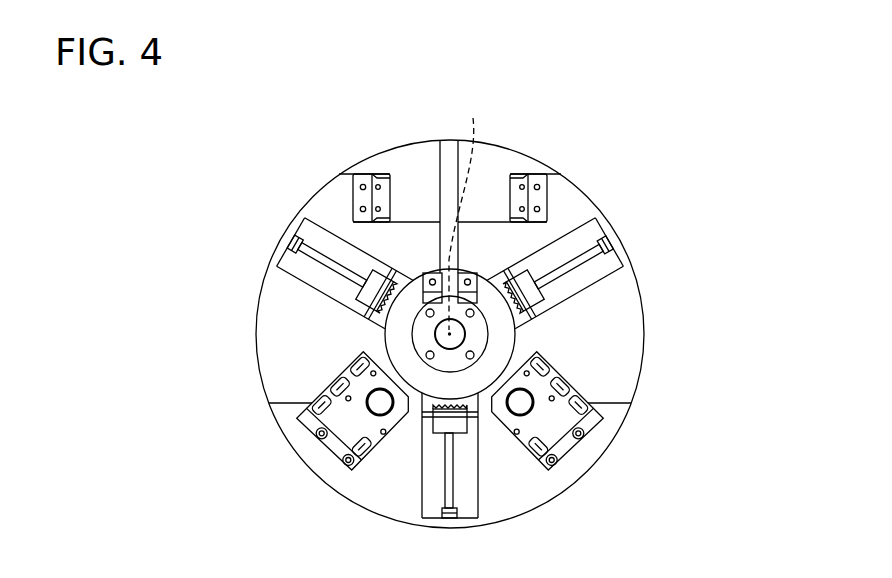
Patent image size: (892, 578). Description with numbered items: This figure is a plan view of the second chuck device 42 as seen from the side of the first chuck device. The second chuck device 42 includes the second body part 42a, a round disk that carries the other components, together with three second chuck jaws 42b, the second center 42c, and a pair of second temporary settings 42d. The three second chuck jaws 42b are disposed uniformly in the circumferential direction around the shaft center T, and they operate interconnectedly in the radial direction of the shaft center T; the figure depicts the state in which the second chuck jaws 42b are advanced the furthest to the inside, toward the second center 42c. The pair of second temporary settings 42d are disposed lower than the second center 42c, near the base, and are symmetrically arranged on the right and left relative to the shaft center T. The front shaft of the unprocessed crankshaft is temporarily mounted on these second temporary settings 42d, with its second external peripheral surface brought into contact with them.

The second chuck device 42 is at (609, 168).
The second body part 42a is at (641, 287).
The second chuck jaws 42b is at (367, 295).
The second center 42c is at (436, 333).
The second temporary settings 42d is at (372, 409).
The shaft center T is at (463, 214).